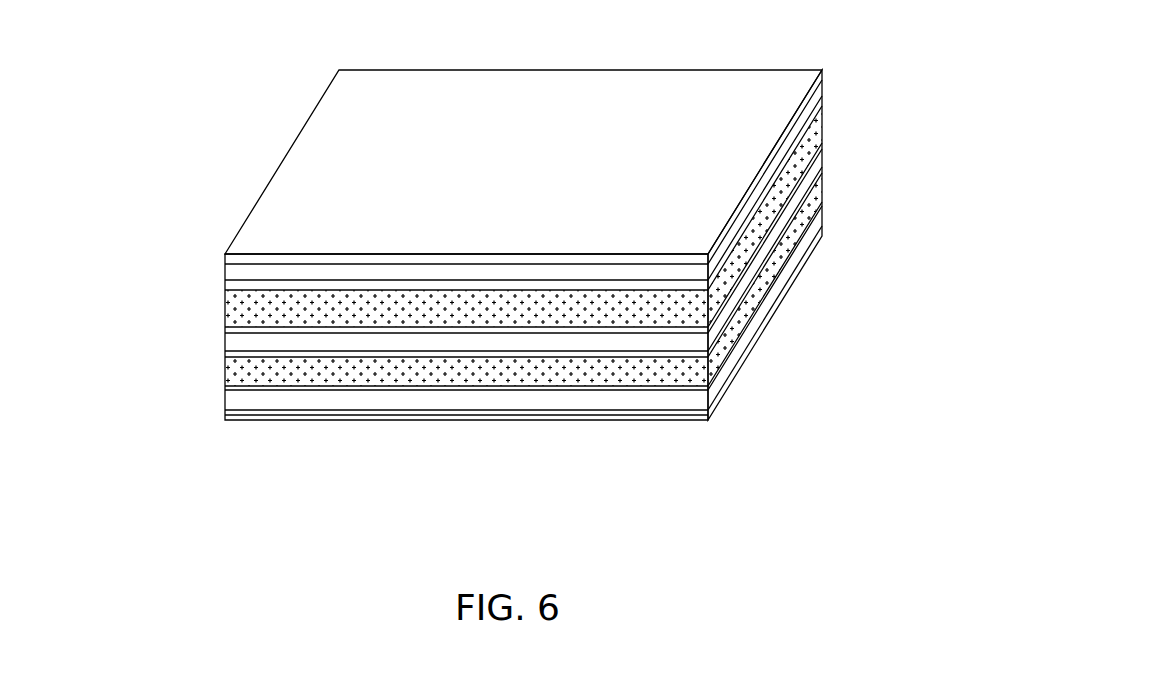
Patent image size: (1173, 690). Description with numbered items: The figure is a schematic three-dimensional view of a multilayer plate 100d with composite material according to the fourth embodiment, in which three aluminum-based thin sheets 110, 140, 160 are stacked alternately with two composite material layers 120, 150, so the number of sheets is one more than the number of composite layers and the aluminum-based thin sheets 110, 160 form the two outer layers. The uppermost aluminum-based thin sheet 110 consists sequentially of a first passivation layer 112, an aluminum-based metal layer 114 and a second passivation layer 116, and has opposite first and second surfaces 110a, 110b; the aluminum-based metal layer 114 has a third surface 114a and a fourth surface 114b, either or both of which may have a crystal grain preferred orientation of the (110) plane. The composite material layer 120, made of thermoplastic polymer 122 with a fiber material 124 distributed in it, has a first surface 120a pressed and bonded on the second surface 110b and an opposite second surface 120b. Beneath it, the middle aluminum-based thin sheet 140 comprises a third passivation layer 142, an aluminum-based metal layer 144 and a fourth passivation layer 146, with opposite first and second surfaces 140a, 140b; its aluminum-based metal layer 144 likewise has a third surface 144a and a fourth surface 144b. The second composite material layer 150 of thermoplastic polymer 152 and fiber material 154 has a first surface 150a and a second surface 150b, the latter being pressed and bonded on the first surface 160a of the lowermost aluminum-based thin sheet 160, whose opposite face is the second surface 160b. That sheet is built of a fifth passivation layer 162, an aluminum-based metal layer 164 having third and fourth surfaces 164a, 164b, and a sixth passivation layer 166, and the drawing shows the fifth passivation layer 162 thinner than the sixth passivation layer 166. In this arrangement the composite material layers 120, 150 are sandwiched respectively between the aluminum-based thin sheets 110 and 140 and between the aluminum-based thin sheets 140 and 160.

The multilayer plate with composite material 100d is at (233, 50).
The aluminum-based thin sheet 110 is at (141, 190).
The first surface 110a is at (297, 254).
The second surface 110b is at (232, 291).
The first passivation layer 112 is at (260, 258).
The aluminum-based metal layer 114 is at (232, 266).
The third surface 114a is at (303, 267).
The fourth surface 114b is at (330, 285).
The second passivation layer 116 is at (232, 284).
The composite material layer 120 is at (906, 220).
The first surface 120a is at (484, 305).
The second surface 120b is at (540, 328).
The thermoplastic polymer 122 is at (712, 304).
The fiber material 124 is at (712, 312).
The aluminum-based thin sheet 140 is at (906, 325).
The first surface 140a is at (370, 323).
The second surface 140b is at (627, 356).
The third passivation layer 142 is at (712, 318).
The aluminum-based metal layer 144 is at (712, 345).
The third surface 144a is at (453, 334).
The fourth surface 144b is at (423, 350).
The fourth passivation layer 146 is at (714, 358).
The composite material layer 150 is at (906, 445).
The first surface 150a is at (595, 360).
The second surface 150b is at (653, 388).
The thermoplastic polymer 152 is at (714, 374).
The fiber material 154 is at (716, 385).
The aluminum-based thin sheet 160 is at (141, 357).
The first surface 160a is at (242, 390).
The second surface 160b is at (273, 422).
The fifth passivation layer 162 is at (228, 388).
The aluminum-based metal layer 164 is at (236, 400).
The third surface 164a is at (393, 393).
The fourth surface 164b is at (431, 412).
The sixth passivation layer 166 is at (226, 412).